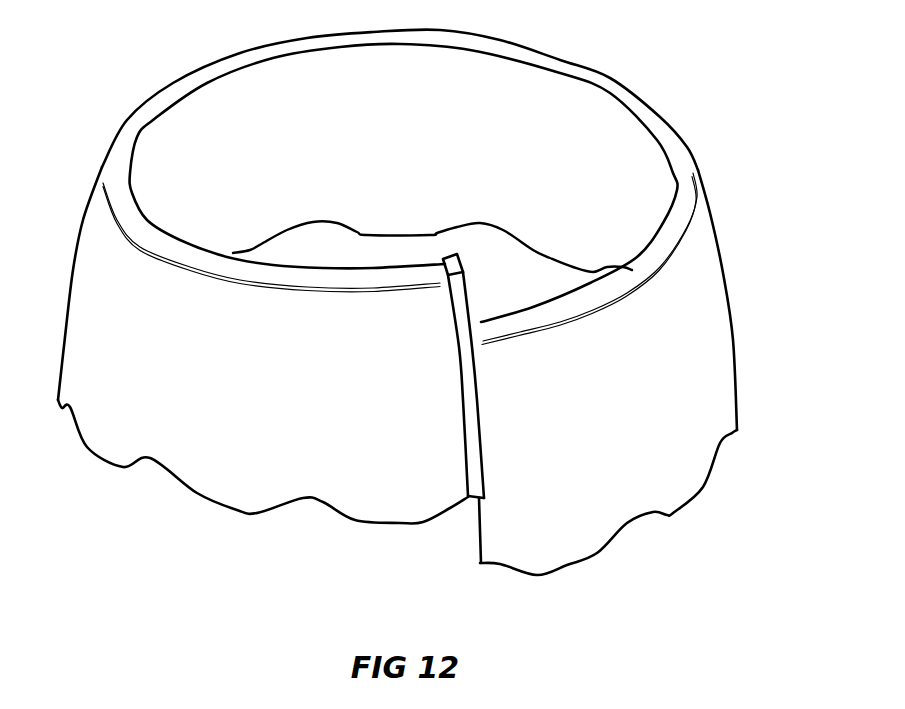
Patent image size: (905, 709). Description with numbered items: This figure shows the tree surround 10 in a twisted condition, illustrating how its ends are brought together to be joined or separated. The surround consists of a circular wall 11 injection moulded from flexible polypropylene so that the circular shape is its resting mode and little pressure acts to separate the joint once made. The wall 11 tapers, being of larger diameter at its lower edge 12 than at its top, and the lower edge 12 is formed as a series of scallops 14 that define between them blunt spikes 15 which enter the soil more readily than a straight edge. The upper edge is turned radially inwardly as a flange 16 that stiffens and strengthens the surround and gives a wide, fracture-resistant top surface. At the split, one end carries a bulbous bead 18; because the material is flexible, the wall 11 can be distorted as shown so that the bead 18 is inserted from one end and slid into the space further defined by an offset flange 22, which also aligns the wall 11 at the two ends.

The tree surround 10 is at (426, 319).
The circular wall 11 is at (623, 447).
The lower edge 12 is at (237, 512).
The scallops 14 is at (320, 502).
The blunt spikes 15 is at (627, 527).
The flange 16 is at (618, 80).
The bulbous bead 18 is at (477, 527).
The offset flange 22 is at (470, 412).